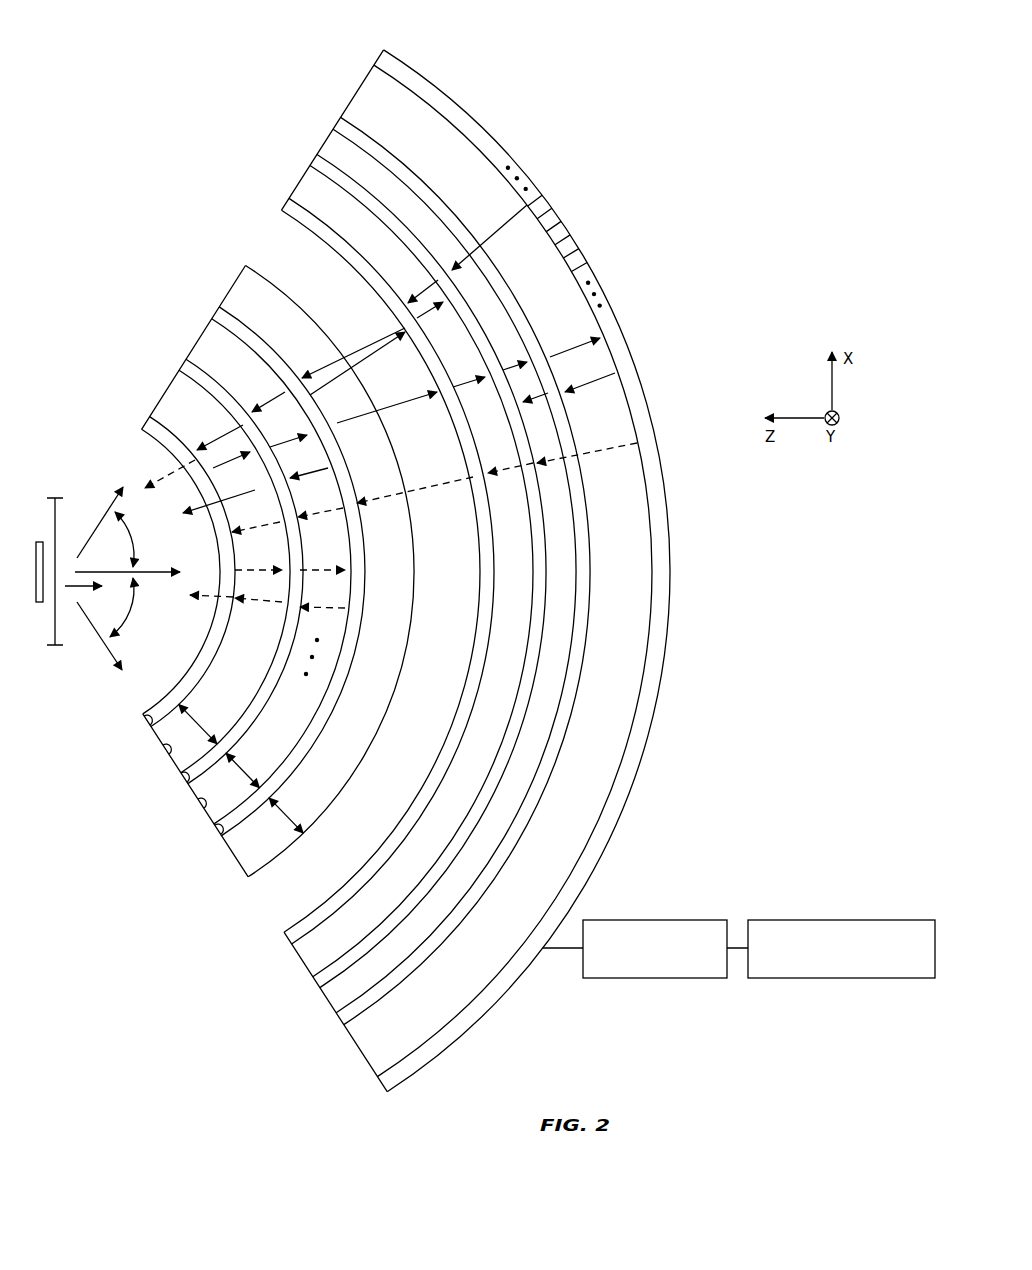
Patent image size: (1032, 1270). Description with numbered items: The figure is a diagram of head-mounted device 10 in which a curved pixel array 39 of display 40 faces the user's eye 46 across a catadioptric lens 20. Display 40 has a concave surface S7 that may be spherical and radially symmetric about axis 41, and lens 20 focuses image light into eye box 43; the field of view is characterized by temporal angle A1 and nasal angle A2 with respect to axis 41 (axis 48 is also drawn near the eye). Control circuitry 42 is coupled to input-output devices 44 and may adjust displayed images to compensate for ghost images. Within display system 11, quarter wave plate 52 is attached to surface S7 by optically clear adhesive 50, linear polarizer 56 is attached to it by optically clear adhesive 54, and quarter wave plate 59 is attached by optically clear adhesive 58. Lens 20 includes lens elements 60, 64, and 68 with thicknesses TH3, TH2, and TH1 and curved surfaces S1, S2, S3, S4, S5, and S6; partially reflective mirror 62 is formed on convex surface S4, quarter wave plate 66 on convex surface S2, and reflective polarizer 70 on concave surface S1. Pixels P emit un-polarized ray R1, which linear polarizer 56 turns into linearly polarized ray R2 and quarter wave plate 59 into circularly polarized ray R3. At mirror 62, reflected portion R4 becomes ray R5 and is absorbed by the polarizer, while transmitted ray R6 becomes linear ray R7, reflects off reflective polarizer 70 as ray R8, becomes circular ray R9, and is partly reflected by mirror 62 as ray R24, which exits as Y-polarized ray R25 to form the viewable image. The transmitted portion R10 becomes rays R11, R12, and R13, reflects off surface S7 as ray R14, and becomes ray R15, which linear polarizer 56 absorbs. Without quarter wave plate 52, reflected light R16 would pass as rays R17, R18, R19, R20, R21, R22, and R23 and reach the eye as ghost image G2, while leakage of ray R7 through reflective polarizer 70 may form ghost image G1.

The head-mounted device 10 is at (695, 240).
The display system 11 is at (329, 17).
The catadioptric lens 20 is at (201, 235).
The pixel array 39 is at (430, 54).
The display 40 is at (604, 830).
The axis 41 is at (152, 570).
The control circuitry 42 is at (660, 918).
The eye box 43 is at (56, 497).
The input-output devices 44 is at (818, 918).
The eye 46 is at (39, 603).
The eye axis 48 is at (66, 590).
The optically clear adhesive 50 is at (356, 93).
The quarter wave plate 52 is at (337, 123).
The optically clear adhesive 54 is at (325, 142).
The linear polarizer 56 is at (314, 160).
The optically clear adhesive 58 is at (299, 182).
The quarter wave plate 59 is at (285, 204).
The lens element 60 is at (232, 287).
The partially reflective mirror 62 is at (216, 313).
The lens element 64 is at (199, 339).
The quarter wave plate 66 is at (182, 365).
The lens element 68 is at (165, 393).
The reflective polarizer 70 is at (146, 423).
The pixels P is at (572, 236).
The ray R1 is at (489, 237).
The linearly polarized ray R2 is at (419, 289).
The circularly polarized ray R3 is at (353, 347).
The reflected ray R4 is at (357, 363).
The linearly polarized ray R5 is at (433, 319).
The reduced-intensity ray R6 is at (266, 396).
The linearly polarized ray R7 is at (220, 436).
The reflected ray R8 is at (231, 467).
The circularly polarized ray R9 is at (288, 449).
The ray R10 is at (387, 410).
The linearly polarized light R11 is at (472, 390).
The ray R12 is at (520, 376).
The circularly polarized light R13 is at (575, 354).
The reflected light R14 is at (590, 389).
The linearly polarized light R15 is at (537, 411).
The linear polarized light R16 is at (587, 445).
The linear polarized light R17 is at (510, 480).
The right hand circular polarized light R18 is at (415, 494).
The ray R19 is at (320, 525).
The linear polarized light R20 is at (256, 535).
The reflected light R21 is at (258, 583).
The right hand circular polarized light R22 is at (322, 584).
The reflected light R23 is at (322, 641).
The reflected ray R24 is at (281, 548).
The linearly polarized ray R25 is at (225, 504).
The ghost image G1 is at (168, 472).
The ghost image G2 is at (209, 608).
The temporal angle A1 is at (131, 607).
The nasal angle A2 is at (133, 539).
The thickness TH1 is at (204, 721).
The thickness TH2 is at (250, 767).
The thickness TH3 is at (292, 813).
The concave surface S1 is at (151, 727).
The convex surface S2 is at (169, 752).
The concave surface S3 is at (187, 781).
The convex surface S4 is at (204, 806).
The concave surface S5 is at (221, 833).
The convex surface S6 is at (248, 879).
The concave surface S7 is at (400, 1078).